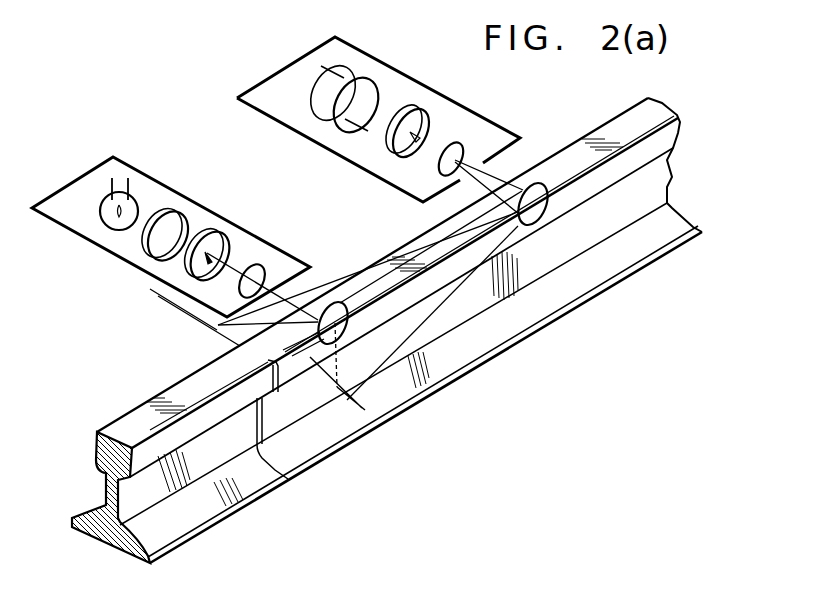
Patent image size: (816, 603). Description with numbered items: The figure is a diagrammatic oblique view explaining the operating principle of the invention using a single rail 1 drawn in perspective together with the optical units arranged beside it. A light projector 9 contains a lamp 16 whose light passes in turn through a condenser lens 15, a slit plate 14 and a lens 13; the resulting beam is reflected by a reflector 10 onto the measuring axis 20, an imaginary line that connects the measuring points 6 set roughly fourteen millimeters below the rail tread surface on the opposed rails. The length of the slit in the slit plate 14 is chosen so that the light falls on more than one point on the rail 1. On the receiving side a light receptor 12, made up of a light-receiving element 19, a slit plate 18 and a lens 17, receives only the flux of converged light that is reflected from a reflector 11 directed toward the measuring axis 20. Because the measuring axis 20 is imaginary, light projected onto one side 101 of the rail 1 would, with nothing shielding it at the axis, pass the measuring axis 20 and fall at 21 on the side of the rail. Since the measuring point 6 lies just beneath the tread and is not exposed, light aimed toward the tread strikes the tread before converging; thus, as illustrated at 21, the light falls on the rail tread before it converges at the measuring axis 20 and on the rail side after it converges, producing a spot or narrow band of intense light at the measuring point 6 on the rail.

The rail 1 is at (95, 455).
The measuring point 6 is at (274, 385).
The light projector 9 is at (77, 178).
The reflector 10 is at (335, 302).
The reflector 11 is at (540, 183).
The light receptor 12 is at (275, 75).
The lens 13 is at (263, 277).
The slit plate 14 is at (220, 240).
The condenser lens 15 is at (175, 208).
The lamp 16 is at (137, 200).
The lens 17 is at (467, 135).
The slit plate 18 is at (418, 113).
The light-receiving element 19 is at (362, 78).
The measuring axis 20 is at (347, 408).
The light fall position on rail 21 is at (275, 472).
The side of rail 101 is at (448, 327).